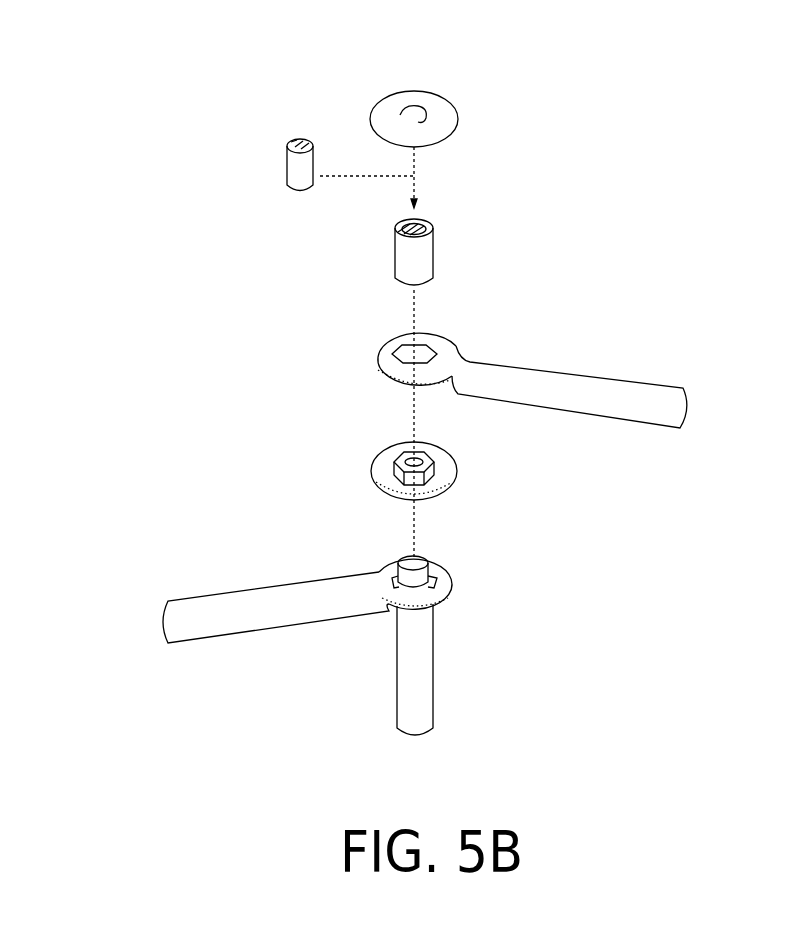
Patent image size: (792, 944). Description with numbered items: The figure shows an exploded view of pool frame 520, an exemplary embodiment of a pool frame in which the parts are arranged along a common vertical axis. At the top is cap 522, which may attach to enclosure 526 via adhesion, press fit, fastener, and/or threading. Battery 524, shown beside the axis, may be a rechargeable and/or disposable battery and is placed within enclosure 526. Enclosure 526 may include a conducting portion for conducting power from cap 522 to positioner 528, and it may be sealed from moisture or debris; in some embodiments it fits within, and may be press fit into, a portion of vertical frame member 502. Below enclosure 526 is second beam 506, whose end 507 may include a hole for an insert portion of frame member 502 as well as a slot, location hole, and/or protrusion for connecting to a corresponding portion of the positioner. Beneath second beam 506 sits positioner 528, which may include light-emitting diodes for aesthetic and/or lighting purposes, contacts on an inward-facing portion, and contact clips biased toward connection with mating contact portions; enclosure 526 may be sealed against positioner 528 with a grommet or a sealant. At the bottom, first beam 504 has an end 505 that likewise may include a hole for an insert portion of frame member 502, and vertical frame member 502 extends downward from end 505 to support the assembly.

The pool frame 520 is at (142, 52).
The cap 522 is at (433, 92).
The battery 524 is at (283, 162).
The enclosure 526 is at (435, 265).
The second beam 506 is at (477, 336).
The end 507 is at (375, 350).
The positioner 528 is at (367, 468).
The first beam 504 is at (262, 587).
The end 505 is at (457, 585).
The frame member 502 is at (395, 698).